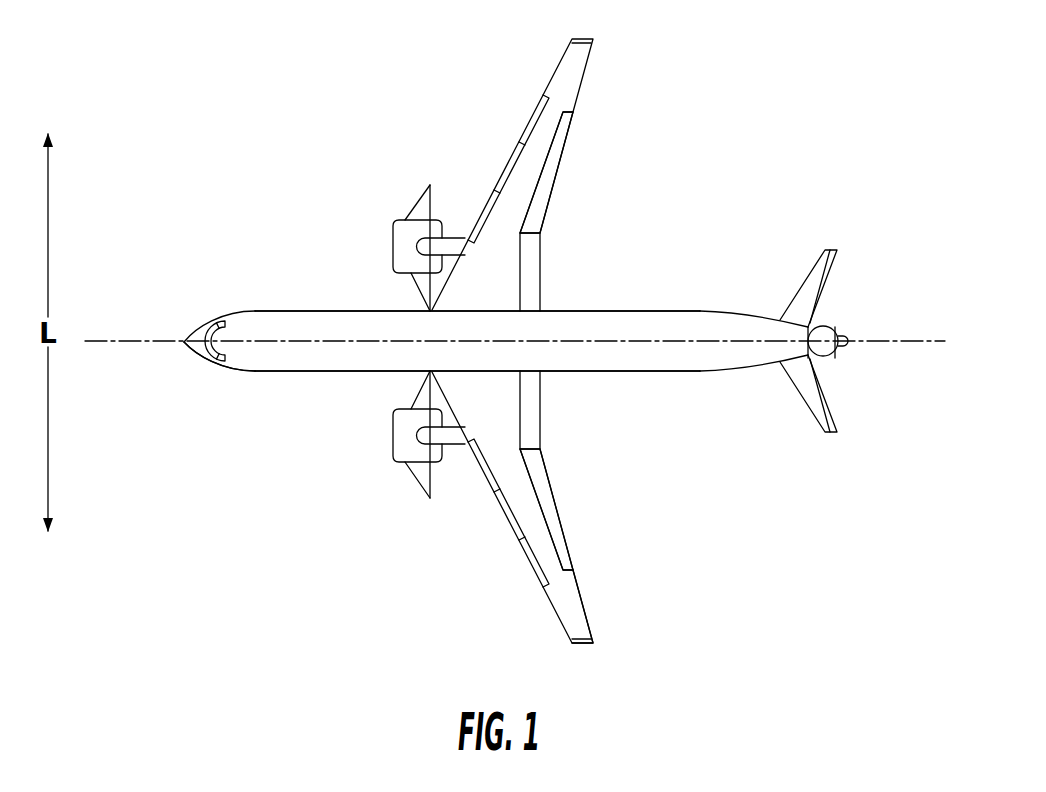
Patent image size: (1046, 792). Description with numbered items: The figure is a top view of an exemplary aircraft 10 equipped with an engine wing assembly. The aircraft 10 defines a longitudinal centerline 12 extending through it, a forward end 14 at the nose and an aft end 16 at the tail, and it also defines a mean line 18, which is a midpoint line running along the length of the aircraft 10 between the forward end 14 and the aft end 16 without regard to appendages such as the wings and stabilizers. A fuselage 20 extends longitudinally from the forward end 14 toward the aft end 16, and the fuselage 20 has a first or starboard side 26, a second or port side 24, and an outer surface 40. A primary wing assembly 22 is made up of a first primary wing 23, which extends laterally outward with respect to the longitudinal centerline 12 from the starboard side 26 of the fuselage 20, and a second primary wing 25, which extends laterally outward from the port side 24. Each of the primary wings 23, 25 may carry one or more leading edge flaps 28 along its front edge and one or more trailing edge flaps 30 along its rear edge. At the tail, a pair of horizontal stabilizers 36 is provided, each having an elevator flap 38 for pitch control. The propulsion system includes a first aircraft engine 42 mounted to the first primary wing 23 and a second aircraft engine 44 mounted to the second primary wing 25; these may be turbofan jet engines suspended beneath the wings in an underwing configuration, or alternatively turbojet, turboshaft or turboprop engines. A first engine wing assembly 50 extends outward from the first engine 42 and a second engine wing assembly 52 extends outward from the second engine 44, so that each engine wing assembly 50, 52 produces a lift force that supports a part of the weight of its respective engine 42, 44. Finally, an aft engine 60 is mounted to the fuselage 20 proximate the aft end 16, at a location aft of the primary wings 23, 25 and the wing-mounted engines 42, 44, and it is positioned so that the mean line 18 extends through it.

The aircraft 10 is at (741, 144).
The longitudinal centerline 12 is at (146, 338).
The forward end 14 is at (183, 351).
The aft end 16 is at (866, 370).
The mean line 18 is at (262, 342).
The fuselage 20 is at (240, 365).
The primary wing assembly 22 is at (583, 58).
The first primary wing 23 is at (533, 192).
The port side 24 is at (335, 375).
The second primary wing 25 is at (573, 603).
The starboard side 26 is at (316, 306).
The leading edge flaps 28 is at (505, 517).
The trailing edge flaps 30 is at (562, 520).
The horizontal stabilizers 36 is at (820, 270).
The elevator flap 38 is at (835, 270).
The outer surface 40 is at (660, 362).
The first aircraft engine 42 is at (407, 224).
The second aircraft engine 44 is at (411, 457).
The first engine wing assembly 50 is at (438, 190).
The second engine wing assembly 52 is at (425, 509).
The aft engine 60 is at (838, 318).